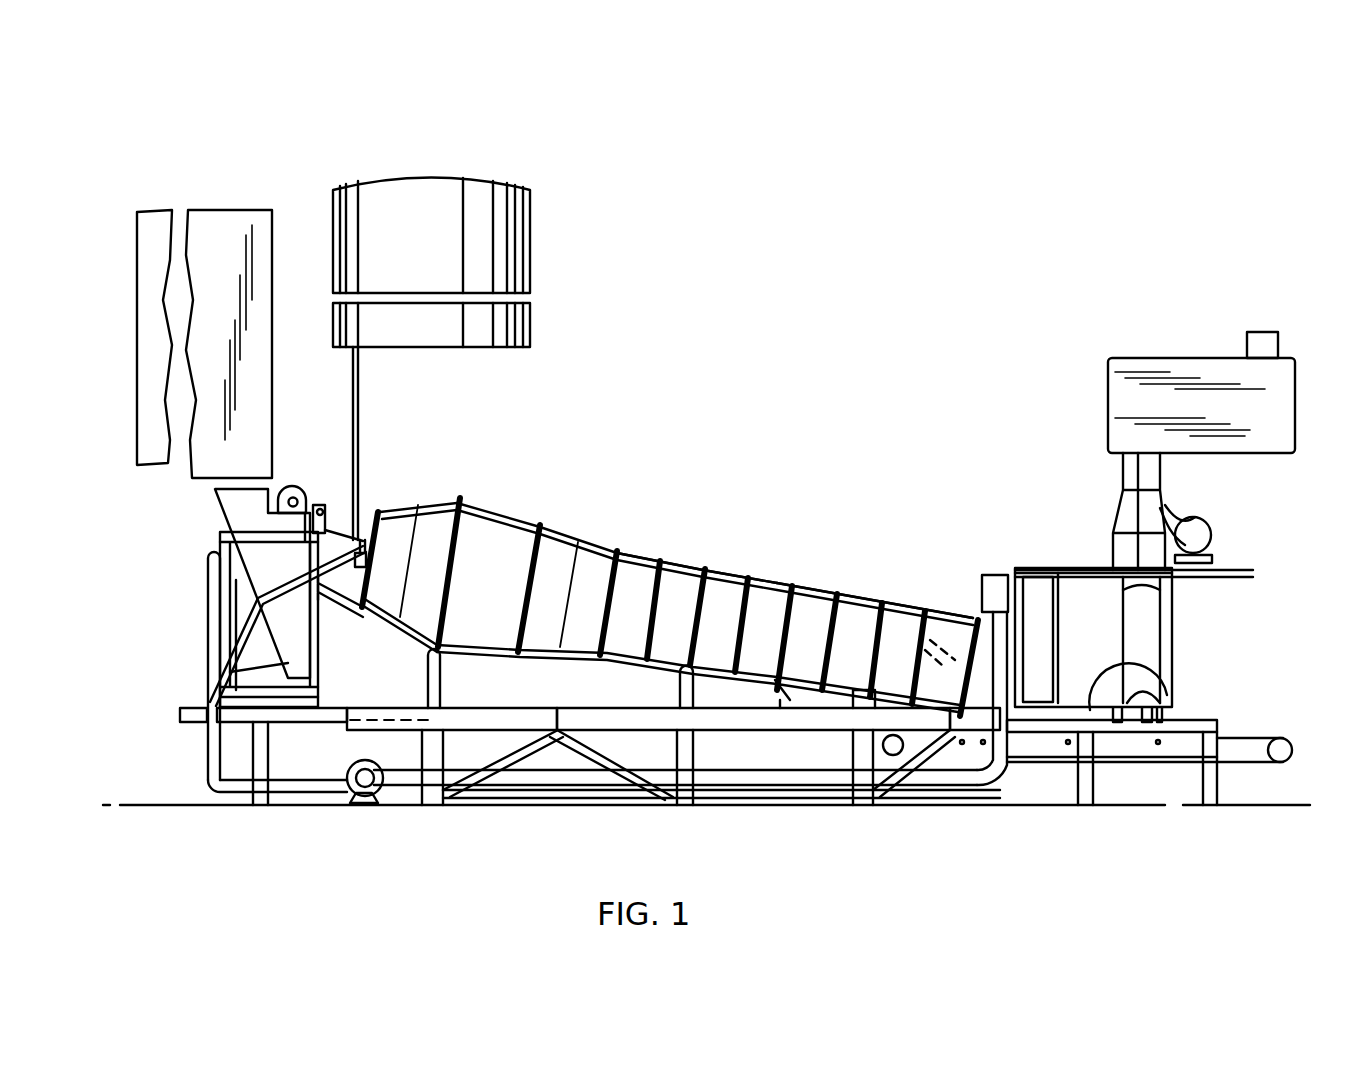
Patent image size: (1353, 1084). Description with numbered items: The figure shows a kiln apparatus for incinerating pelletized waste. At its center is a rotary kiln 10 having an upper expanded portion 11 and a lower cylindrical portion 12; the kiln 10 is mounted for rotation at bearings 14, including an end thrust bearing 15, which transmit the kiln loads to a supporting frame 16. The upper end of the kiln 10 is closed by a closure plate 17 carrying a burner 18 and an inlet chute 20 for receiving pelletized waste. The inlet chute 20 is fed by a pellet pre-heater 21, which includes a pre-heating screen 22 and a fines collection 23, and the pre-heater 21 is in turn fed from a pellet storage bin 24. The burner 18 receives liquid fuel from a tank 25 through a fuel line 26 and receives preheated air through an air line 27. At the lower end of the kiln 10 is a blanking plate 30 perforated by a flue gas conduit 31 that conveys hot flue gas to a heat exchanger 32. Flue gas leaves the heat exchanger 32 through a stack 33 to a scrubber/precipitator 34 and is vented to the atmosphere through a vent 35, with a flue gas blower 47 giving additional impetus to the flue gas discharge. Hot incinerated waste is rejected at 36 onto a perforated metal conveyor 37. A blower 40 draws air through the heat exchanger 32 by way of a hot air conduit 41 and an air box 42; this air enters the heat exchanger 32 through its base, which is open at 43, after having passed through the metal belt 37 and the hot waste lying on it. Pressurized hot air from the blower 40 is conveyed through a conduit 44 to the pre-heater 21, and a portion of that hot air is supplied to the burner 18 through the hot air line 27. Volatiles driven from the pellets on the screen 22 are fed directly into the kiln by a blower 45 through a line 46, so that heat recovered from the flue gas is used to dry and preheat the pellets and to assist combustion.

The kiln 10 is at (620, 553).
The upper expanded portion 11 is at (467, 525).
The lower cylindrical portion 12 is at (764, 600).
The bearings 14 is at (440, 652).
The end thrust bearing 15 is at (790, 700).
The supporting frame 16 is at (725, 732).
The closure plate 17 is at (414, 552).
The burner 18 is at (364, 540).
The inlet chute 20 is at (338, 577).
The pellet pre-heater 21 is at (228, 501).
The pre-heating screen 22 is at (230, 610).
The fines collection 23 is at (213, 676).
The pellet storage bin 24 is at (160, 218).
The tank 25 is at (505, 192).
The fuel line 26 is at (360, 383).
The air line 27 is at (238, 620).
The blanking plate 30 is at (972, 625).
The flue gas conduit 31 is at (933, 603).
The heat exchanger 32 is at (1083, 636).
The stack 33 is at (1125, 512).
The scrubber/precipitator 34 is at (1115, 383).
The vent 35 is at (1257, 335).
The rejection point 36 is at (1007, 790).
The perforated metal conveyor 37 is at (1242, 738).
The blower 40 is at (360, 802).
The hot air conduit 41 is at (590, 793).
The air box 42 is at (1000, 577).
The opening 43 is at (1167, 690).
The conduit 44 is at (208, 657).
The blower 45 is at (284, 492).
The line 46 is at (333, 523).
The flue gas blower 47 is at (1196, 530).